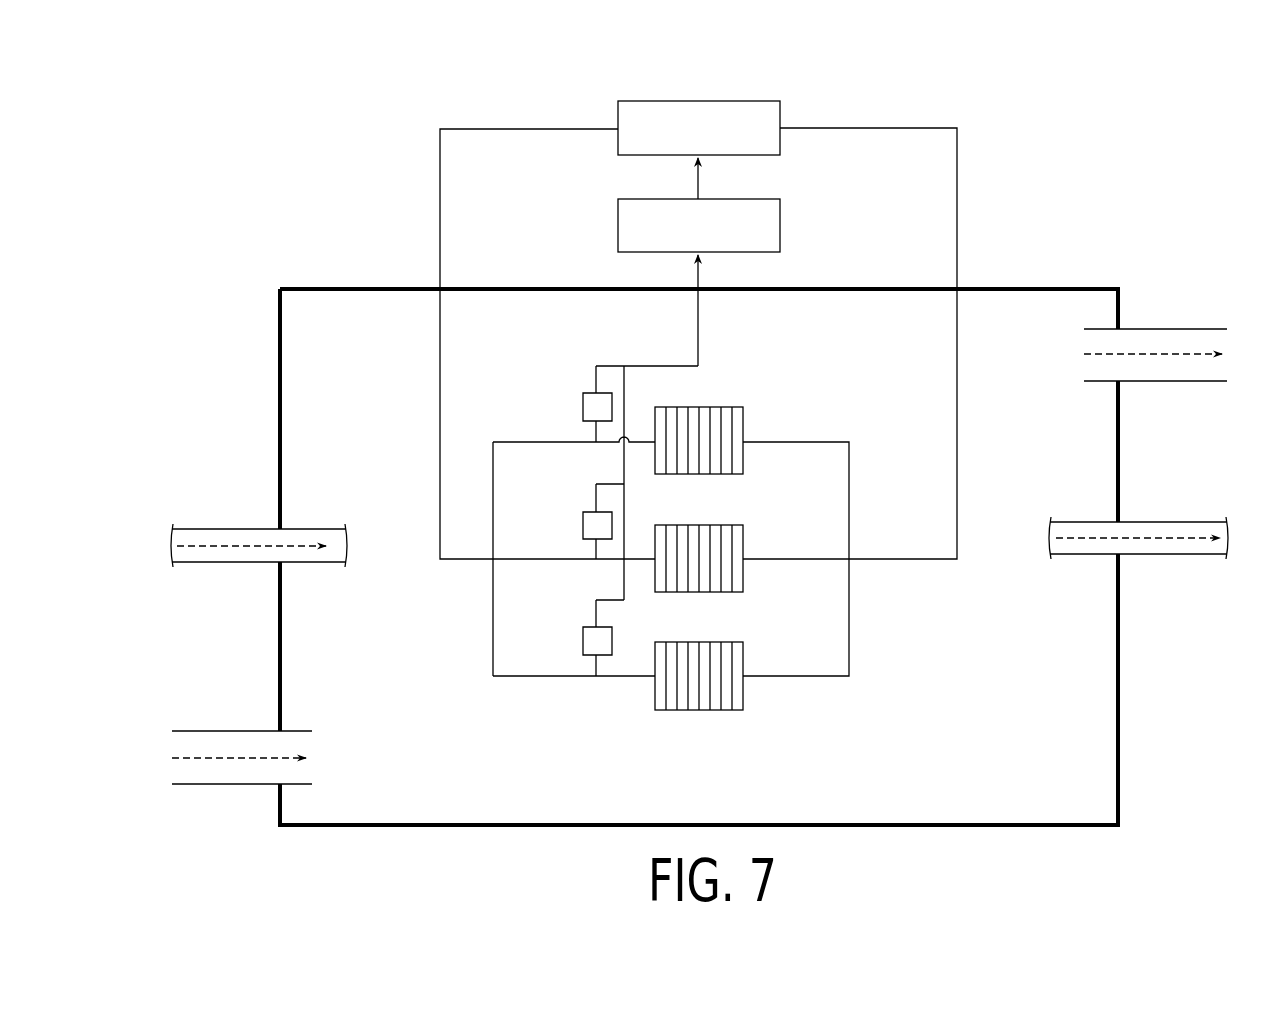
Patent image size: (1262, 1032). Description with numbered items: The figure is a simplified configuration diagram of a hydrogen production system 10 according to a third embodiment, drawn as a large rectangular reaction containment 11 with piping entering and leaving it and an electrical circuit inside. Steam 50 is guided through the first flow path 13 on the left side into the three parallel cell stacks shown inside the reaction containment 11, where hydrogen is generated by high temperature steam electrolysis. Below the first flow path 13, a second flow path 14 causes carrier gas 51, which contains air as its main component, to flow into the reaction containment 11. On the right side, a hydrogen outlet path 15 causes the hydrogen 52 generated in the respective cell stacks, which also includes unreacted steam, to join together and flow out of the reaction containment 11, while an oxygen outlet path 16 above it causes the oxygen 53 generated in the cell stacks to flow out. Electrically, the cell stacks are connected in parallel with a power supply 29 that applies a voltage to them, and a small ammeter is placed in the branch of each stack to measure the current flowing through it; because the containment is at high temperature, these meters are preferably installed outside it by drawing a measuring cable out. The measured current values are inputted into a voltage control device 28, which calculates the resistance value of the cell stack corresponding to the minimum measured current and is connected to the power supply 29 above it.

The hydrogen production system 10 is at (1028, 146).
The reaction containment 11 is at (884, 289).
The first flow path 13 is at (200, 529).
The second flow path 14 is at (295, 731).
The hydrogen outlet path 15 is at (1168, 522).
The oxygen outlet path 16 is at (1100, 329).
The voltage control device 28 is at (727, 199).
The power supply 29 is at (727, 101).
The steam 50 is at (245, 546).
The carrier gas 51 is at (306, 758).
The hydrogen 52 is at (1088, 534).
The oxygen 53 is at (1100, 354).